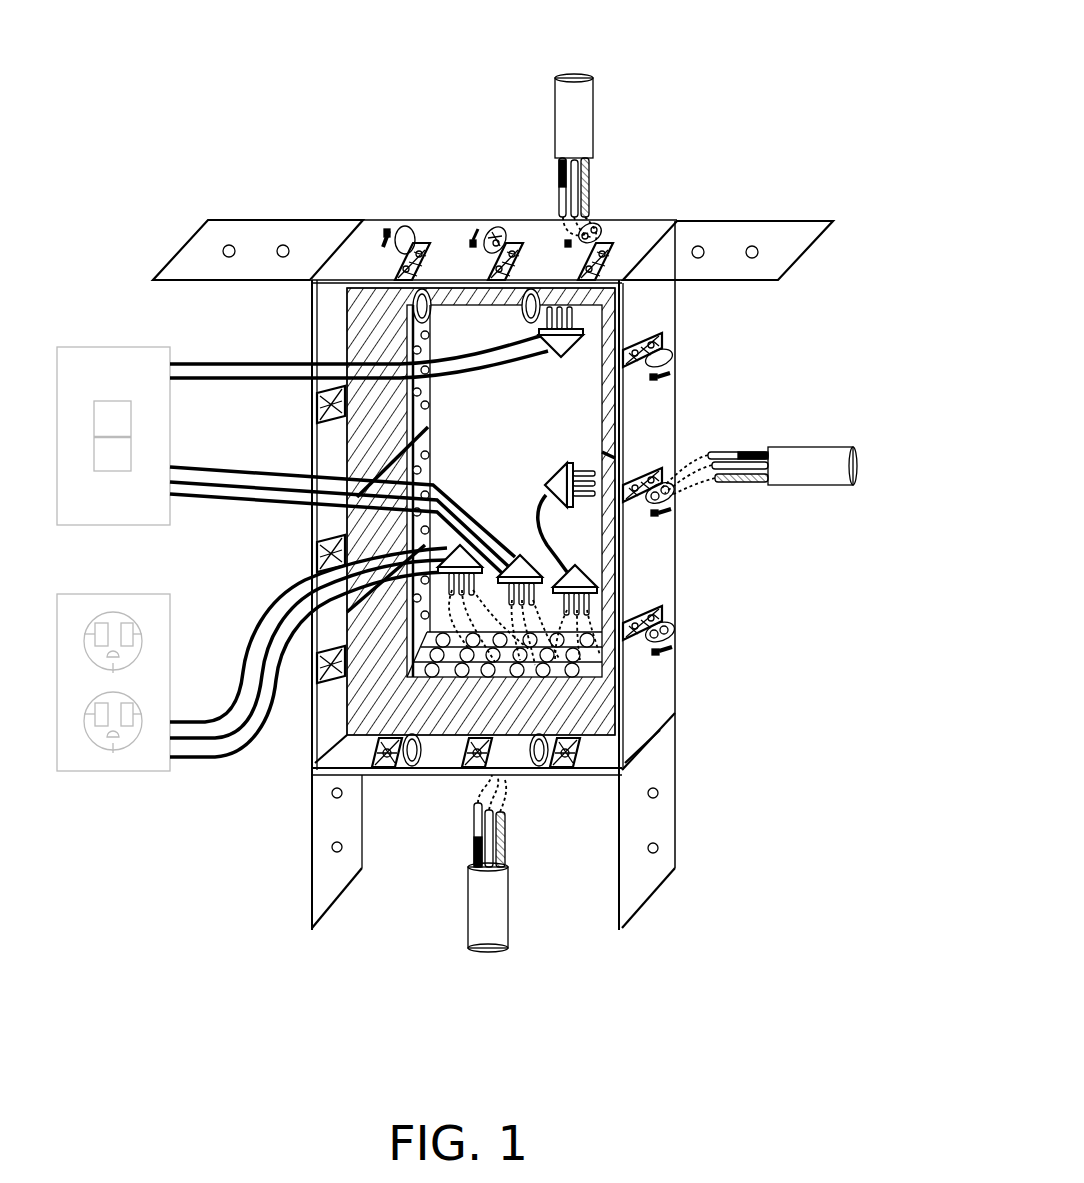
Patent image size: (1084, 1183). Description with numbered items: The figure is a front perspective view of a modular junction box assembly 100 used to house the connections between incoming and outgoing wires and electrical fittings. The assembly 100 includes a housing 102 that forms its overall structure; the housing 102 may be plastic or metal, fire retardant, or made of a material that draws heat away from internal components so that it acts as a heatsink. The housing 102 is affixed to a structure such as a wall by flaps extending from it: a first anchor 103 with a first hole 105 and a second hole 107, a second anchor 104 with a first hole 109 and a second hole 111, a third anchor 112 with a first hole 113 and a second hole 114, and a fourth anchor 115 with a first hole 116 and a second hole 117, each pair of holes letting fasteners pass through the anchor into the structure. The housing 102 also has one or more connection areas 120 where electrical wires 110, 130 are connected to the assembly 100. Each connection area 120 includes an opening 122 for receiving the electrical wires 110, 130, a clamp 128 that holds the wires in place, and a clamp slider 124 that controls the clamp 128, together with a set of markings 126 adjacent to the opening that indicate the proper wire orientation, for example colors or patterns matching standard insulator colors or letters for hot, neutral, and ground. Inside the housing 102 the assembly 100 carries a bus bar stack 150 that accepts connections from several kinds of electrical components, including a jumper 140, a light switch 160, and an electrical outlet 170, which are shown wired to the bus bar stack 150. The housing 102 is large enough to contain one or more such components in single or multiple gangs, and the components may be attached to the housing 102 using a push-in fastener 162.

The modular junction box assembly 100 is at (499, 587).
The housing 102 is at (600, 773).
The first anchor 103 is at (272, 899).
The second anchor 104 is at (724, 900).
The first hole 105 is at (331, 852).
The second hole 107 is at (330, 798).
The first hole 109 is at (658, 852).
The electrical wire 110 is at (531, 928).
The second hole 111 is at (658, 797).
The third anchor 112 is at (781, 197).
The first hole 113 is at (754, 246).
The second hole 114 is at (700, 246).
The fourth anchor 115 is at (292, 195).
The first hole 116 is at (285, 245).
The second hole 117 is at (231, 245).
The connection area 120 is at (755, 564).
The opening 122 is at (678, 632).
The clamp slider 124 is at (660, 613).
The set of markings 126 is at (660, 520).
The clamp 128 is at (745, 524).
The electrical wire 130 is at (530, 30).
The jumper 140 is at (760, 332).
The bus bar stack 150 is at (407, 290).
The light switch 160 is at (97, 337).
The push-in fastener 162 is at (412, 773).
The electrical outlet 170 is at (105, 783).